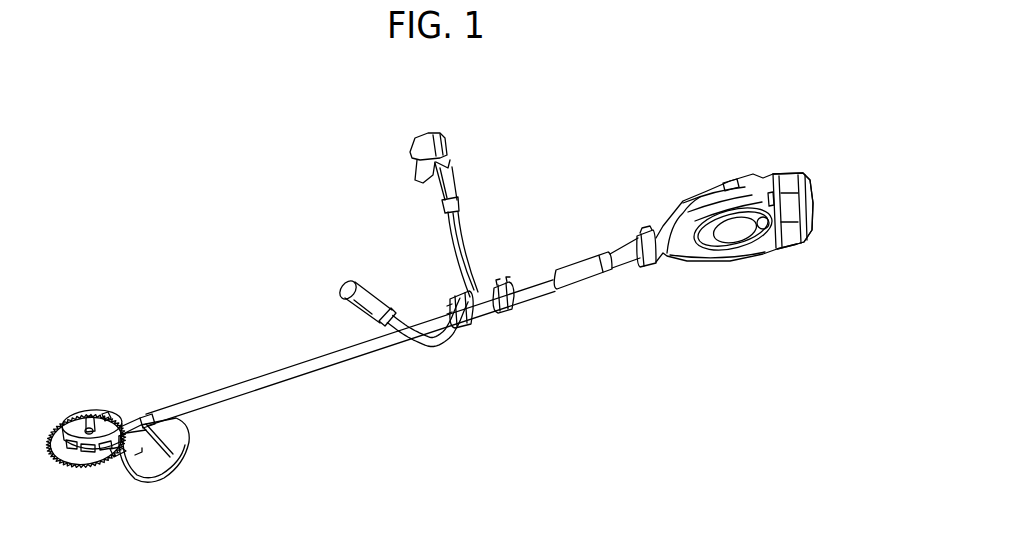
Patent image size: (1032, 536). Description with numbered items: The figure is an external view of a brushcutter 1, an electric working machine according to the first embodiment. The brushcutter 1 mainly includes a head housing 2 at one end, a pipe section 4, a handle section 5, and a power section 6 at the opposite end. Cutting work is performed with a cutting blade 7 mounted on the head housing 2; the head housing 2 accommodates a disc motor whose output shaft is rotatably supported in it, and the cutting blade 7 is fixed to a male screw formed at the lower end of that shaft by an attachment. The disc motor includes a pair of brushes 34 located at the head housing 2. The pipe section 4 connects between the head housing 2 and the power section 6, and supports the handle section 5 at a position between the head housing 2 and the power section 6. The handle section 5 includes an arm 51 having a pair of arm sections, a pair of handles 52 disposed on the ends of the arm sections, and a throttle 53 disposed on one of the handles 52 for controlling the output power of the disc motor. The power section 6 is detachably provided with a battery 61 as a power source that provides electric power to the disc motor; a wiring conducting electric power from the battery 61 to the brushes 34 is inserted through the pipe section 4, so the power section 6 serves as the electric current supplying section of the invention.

The brushcutter 1 is at (593, 135).
The head housing 2 is at (91, 419).
The brushes 34 is at (108, 417).
The pipe section 4 is at (252, 389).
The handle section 5 is at (425, 355).
The arm 51 is at (471, 230).
The handles 52 is at (365, 290).
The throttle 53 is at (421, 142).
The power section 6 is at (700, 186).
The battery 61 is at (800, 243).
The cutting blade 7 is at (88, 462).